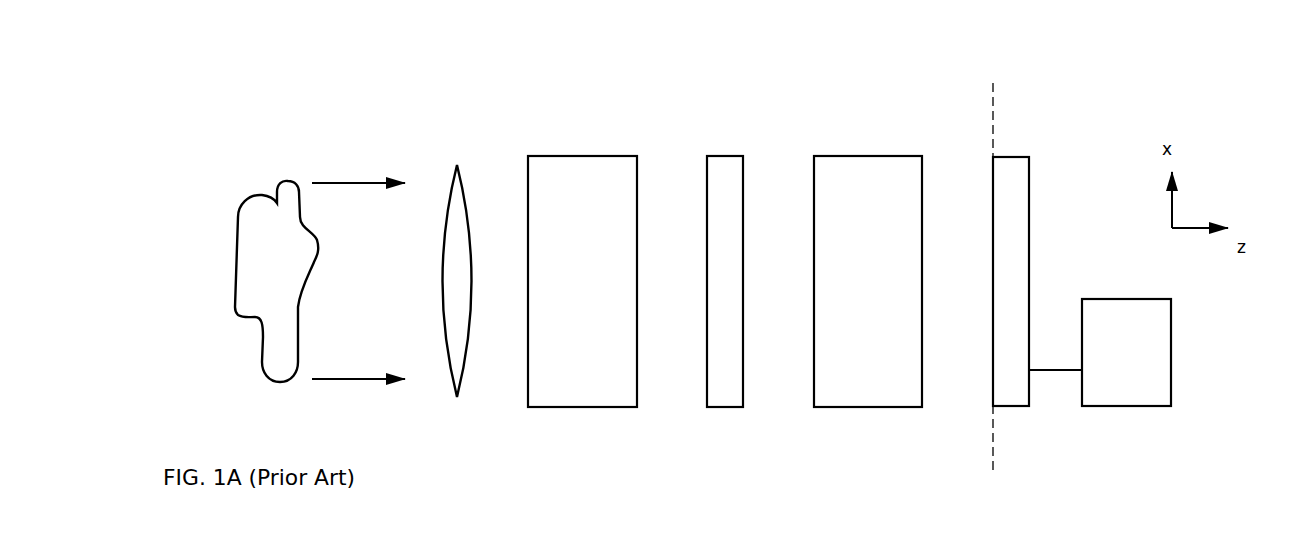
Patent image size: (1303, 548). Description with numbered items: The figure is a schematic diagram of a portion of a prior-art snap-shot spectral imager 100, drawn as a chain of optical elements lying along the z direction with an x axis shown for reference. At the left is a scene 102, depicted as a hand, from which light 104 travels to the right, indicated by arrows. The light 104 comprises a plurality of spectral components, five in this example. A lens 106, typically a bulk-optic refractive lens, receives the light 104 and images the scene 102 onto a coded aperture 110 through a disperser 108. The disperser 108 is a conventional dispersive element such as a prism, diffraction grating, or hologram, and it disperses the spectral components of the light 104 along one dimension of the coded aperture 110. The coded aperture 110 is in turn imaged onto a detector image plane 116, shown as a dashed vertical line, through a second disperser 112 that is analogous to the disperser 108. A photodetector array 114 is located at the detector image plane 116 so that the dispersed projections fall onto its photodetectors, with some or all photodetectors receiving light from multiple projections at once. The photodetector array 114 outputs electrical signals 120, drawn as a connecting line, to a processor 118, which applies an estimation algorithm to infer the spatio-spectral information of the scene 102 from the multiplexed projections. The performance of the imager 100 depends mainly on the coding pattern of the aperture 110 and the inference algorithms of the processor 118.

The imager 100 is at (238, 69).
The scene 102 is at (232, 263).
The light 104 is at (380, 248).
The lens 106 is at (457, 398).
The disperser 108 is at (573, 407).
The coded aperture 110 is at (718, 407).
The disperser 112 is at (860, 407).
The photodetector array 114 is at (1018, 407).
The detector image plane 116 is at (992, 122).
The processor 118 is at (1142, 407).
The electrical signals 120 is at (1045, 368).